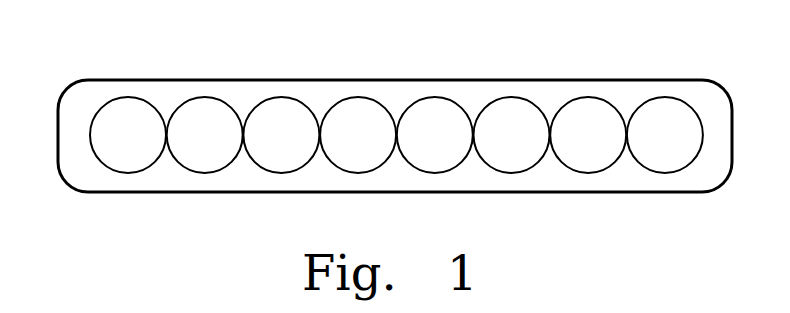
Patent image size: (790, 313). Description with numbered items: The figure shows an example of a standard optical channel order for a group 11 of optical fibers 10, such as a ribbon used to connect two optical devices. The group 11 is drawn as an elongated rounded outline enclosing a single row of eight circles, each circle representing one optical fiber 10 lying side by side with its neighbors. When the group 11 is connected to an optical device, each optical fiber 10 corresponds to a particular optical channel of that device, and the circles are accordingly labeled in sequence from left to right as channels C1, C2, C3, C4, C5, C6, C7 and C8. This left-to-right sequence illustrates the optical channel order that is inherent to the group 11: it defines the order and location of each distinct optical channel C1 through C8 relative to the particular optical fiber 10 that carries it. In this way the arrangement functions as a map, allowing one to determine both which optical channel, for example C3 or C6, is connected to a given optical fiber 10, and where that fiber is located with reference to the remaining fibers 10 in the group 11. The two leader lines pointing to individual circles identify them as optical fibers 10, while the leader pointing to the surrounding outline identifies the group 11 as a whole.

The optical fiber 10 is at (396, 102).
The group of optical fibers 11 is at (397, 81).
The optical channel C1 is at (128, 135).
The optical channel C2 is at (205, 135).
The optical channel C3 is at (281, 135).
The optical channel C4 is at (358, 135).
The optical channel C5 is at (435, 135).
The optical channel C6 is at (512, 135).
The optical channel C7 is at (588, 135).
The optical channel C8 is at (665, 135).